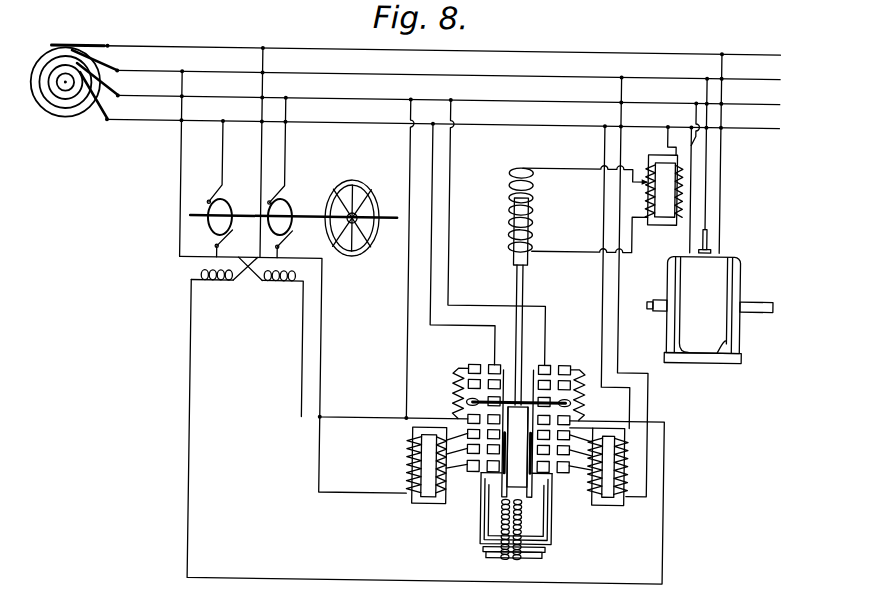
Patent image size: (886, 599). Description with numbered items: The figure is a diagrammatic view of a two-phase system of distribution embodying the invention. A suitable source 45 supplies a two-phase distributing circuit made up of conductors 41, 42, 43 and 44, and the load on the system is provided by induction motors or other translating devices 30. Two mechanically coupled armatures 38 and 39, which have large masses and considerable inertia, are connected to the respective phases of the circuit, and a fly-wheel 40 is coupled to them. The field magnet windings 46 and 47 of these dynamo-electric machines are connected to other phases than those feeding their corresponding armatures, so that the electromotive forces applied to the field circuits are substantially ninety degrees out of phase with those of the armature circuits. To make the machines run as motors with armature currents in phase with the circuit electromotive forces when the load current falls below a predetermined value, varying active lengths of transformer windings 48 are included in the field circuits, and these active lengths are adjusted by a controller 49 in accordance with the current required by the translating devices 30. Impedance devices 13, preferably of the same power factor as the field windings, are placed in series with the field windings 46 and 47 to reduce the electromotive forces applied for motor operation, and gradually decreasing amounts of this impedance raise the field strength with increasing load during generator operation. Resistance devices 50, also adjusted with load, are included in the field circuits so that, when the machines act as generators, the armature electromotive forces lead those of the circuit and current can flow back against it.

The impedance device 13 is at (512, 558).
The translating device 30 is at (710, 296).
The armature 38 is at (231, 188).
The armature 39 is at (292, 177).
The fly-wheel 40 is at (369, 196).
The conductor 41 is at (415, 59).
The conductor 42 is at (425, 75).
The conductor 43 is at (428, 94).
The conductor 44 is at (429, 111).
The source 45 is at (62, 122).
The field magnet winding 46 is at (224, 281).
The field magnet winding 47 is at (269, 336).
The transformer winding 48 is at (454, 503).
The controller 49 is at (556, 362).
The resistance device 50 is at (451, 388).